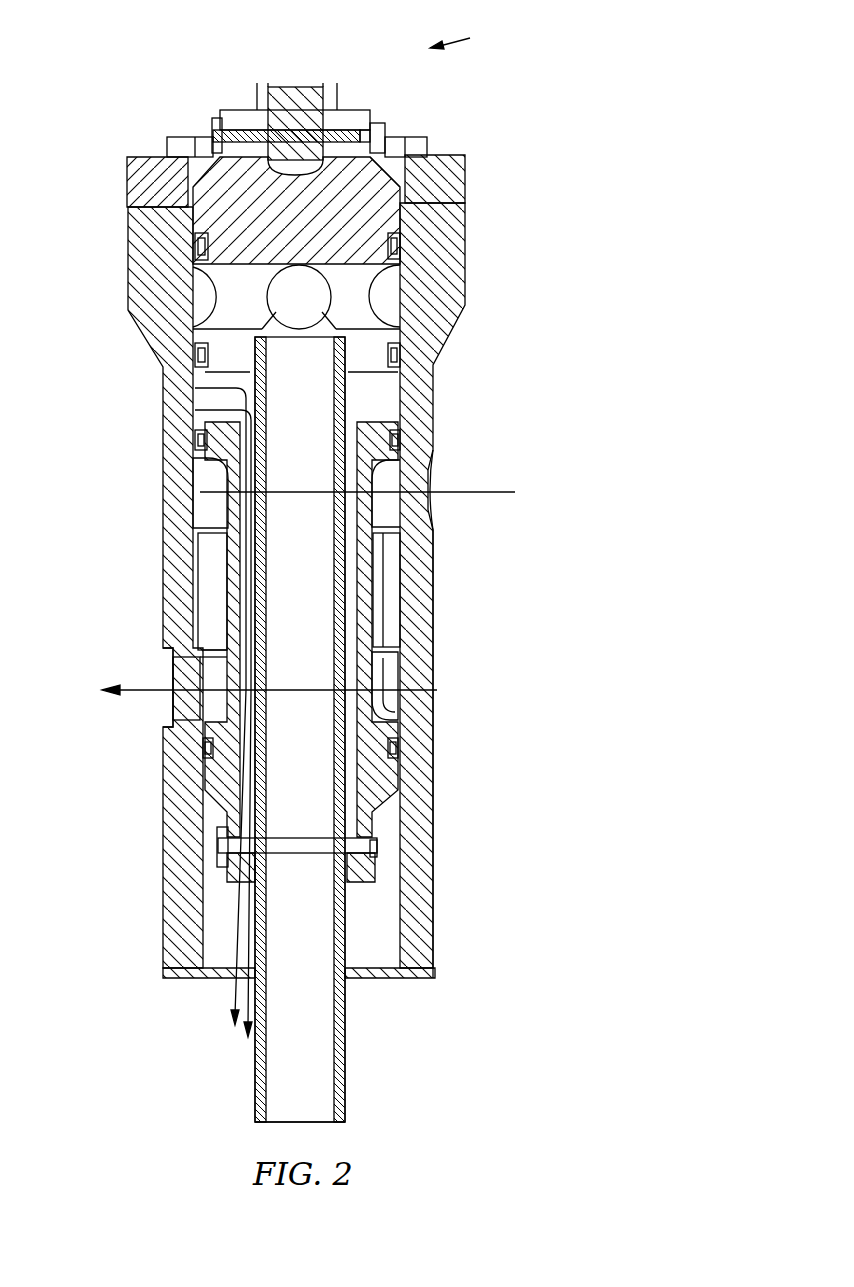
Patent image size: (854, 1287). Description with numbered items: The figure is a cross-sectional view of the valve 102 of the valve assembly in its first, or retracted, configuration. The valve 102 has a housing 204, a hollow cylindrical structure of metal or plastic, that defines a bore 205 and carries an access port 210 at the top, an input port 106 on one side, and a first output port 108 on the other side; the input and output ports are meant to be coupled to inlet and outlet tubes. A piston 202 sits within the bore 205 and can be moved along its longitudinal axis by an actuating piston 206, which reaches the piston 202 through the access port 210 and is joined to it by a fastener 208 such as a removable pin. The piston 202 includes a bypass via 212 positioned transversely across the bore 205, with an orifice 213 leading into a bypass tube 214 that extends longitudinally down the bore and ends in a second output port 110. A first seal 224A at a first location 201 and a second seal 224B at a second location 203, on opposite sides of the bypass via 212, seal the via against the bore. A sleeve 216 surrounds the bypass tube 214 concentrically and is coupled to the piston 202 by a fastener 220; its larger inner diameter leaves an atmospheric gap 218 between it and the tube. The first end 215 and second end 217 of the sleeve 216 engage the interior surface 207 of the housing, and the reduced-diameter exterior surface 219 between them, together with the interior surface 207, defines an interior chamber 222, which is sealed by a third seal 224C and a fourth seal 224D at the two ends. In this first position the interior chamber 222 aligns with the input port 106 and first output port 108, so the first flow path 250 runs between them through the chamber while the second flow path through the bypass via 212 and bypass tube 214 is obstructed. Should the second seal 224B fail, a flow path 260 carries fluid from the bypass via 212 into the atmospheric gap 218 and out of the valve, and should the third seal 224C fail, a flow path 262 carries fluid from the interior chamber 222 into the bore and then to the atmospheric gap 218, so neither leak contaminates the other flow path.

The valve 102 is at (472, 36).
The input port 106 is at (430, 468).
The first output port 108 is at (170, 672).
The second output port 110 is at (317, 1122).
The first location 201 is at (380, 220).
The piston 202 is at (368, 182).
The second location 203 is at (413, 340).
The housing 204 is at (163, 282).
The bore 205 is at (380, 915).
The actuating piston 206 is at (298, 95).
The interior surface 207 is at (400, 572).
The fastener 208 is at (352, 132).
The access port 210 is at (283, 88).
The bypass via 212 is at (390, 283).
The orifice 213 is at (367, 303).
The bypass tube 214 is at (313, 1078).
The first end 215 is at (378, 422).
The sleeve 216 is at (367, 697).
The second end 217 is at (390, 790).
The atmospheric gap 218 is at (225, 790).
The exterior surface 219 is at (368, 713).
The fastener 220 is at (395, 845).
The interior chamber 222 is at (205, 483).
The first seal 224A is at (200, 245).
The second seal 224B is at (197, 348).
The third seal 224C is at (197, 440).
The fourth seal 224D is at (200, 745).
The first flow path 250 is at (467, 493).
The flow path 260 is at (203, 323).
The flow path 262 is at (225, 397).